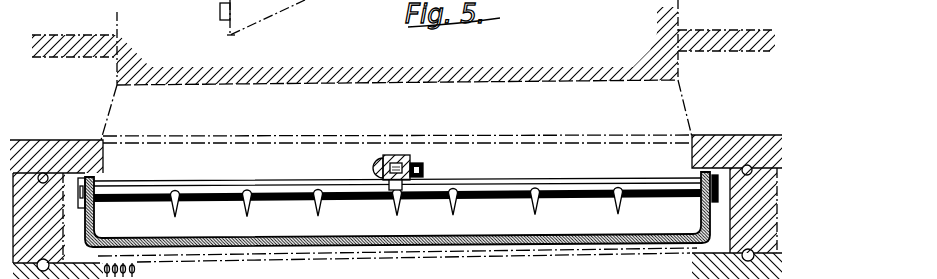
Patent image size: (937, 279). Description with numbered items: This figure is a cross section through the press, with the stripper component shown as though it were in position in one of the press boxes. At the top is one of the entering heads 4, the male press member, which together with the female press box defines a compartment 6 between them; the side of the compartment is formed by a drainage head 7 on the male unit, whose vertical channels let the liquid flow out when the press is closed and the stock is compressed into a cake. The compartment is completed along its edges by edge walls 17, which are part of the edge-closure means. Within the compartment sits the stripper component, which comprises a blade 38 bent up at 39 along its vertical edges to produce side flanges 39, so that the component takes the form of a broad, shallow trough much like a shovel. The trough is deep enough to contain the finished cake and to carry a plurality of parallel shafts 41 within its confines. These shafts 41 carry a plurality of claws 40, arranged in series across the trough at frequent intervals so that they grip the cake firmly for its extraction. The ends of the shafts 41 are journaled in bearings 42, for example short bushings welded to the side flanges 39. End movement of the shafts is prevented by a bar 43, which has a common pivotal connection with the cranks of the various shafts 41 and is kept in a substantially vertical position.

The entering head 4 is at (658, 48).
The compartment 6 is at (397, 178).
The drainage head 7 is at (583, 102).
The edge wall 17 is at (50, 234).
The blade 38 is at (338, 240).
The side flange 39 is at (97, 219).
The claw 40 is at (245, 211).
The shaft 41 is at (213, 190).
The bearing 42 is at (98, 180).
The bar 43 is at (382, 157).